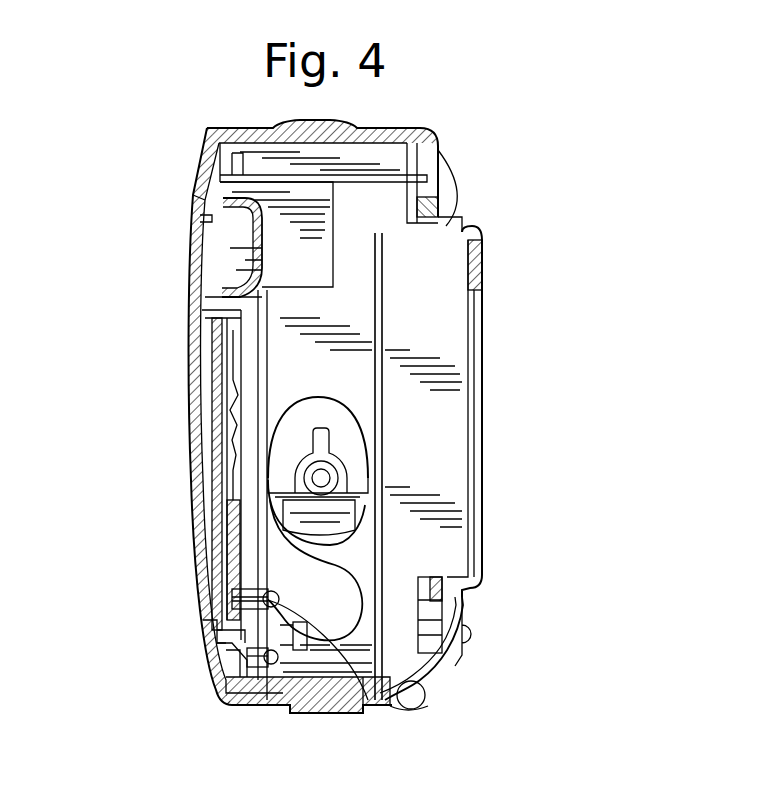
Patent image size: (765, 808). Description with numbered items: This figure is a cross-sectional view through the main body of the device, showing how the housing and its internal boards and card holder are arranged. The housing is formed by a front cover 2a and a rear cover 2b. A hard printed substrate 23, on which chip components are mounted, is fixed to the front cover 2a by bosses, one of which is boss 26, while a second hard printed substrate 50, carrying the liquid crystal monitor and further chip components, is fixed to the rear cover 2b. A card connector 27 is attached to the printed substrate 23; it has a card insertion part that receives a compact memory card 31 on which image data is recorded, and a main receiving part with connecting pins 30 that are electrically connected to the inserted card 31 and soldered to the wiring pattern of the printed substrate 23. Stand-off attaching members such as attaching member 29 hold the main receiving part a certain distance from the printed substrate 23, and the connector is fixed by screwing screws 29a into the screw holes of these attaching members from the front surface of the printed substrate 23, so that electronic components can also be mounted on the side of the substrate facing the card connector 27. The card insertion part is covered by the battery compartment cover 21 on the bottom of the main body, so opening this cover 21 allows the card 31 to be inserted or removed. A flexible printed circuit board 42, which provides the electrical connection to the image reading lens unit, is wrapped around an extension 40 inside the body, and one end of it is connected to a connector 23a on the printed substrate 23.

The front cover 2a is at (190, 522).
The rear cover 2b is at (482, 562).
The battery compartment cover 21 is at (258, 705).
The printed substrate 23 is at (232, 433).
The connector 23a is at (280, 645).
The boss 26 is at (247, 660).
The card connector 27 is at (212, 353).
The attaching member 29 is at (240, 607).
The screw 29a is at (380, 700).
The connecting pins 30 is at (230, 297).
The compact memory card 31 is at (217, 653).
The extension 40 is at (347, 462).
The flexible printed circuit board 42 is at (353, 577).
The printed substrate 50 is at (380, 338).